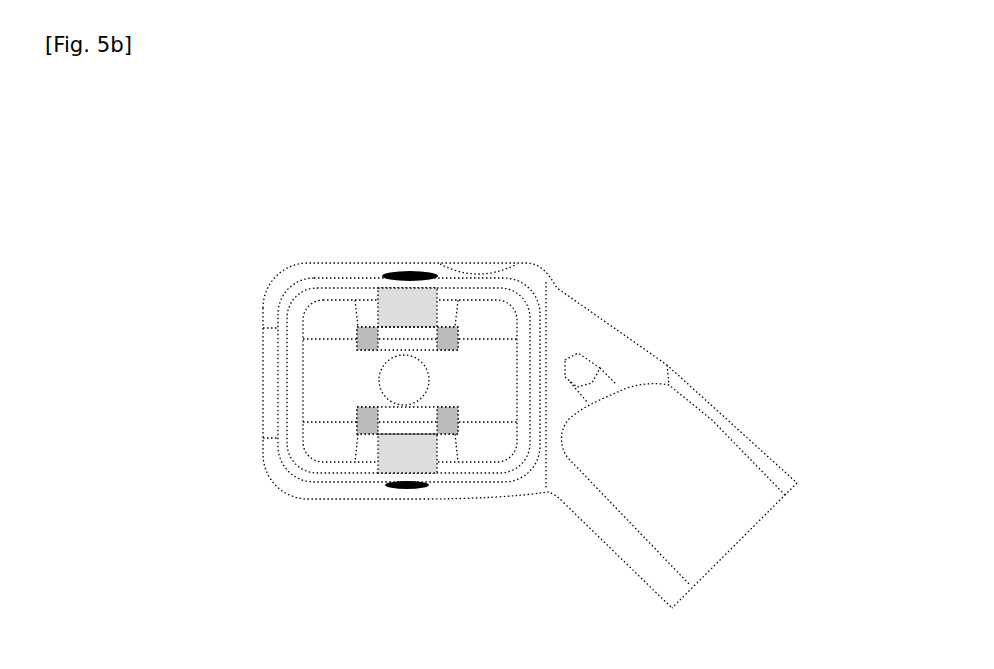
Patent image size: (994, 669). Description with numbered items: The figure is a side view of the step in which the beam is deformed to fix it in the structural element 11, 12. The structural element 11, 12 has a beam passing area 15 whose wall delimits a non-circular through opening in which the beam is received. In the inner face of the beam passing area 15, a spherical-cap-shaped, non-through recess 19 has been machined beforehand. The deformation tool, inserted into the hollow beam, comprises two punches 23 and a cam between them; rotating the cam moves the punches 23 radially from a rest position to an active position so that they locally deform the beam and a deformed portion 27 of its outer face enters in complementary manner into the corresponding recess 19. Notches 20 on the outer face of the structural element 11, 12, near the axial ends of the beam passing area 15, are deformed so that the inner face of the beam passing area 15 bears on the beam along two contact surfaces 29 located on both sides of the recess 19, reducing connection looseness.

The beam passing area 15 is at (272, 275).
The recess 19 is at (410, 275).
The notches 20 is at (478, 268).
The punches 23 is at (403, 316).
The deformed portion 27 is at (400, 276).
The contact surfaces 29 is at (503, 277).
The structural element 11 is at (733, 480).
The structural element 12 is at (755, 448).